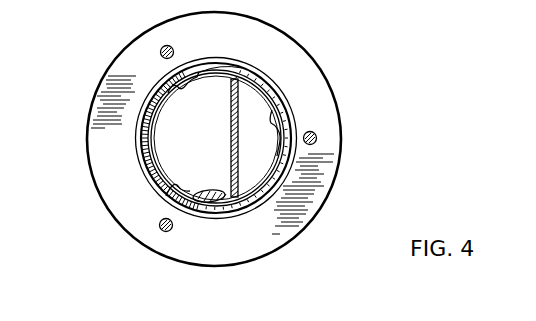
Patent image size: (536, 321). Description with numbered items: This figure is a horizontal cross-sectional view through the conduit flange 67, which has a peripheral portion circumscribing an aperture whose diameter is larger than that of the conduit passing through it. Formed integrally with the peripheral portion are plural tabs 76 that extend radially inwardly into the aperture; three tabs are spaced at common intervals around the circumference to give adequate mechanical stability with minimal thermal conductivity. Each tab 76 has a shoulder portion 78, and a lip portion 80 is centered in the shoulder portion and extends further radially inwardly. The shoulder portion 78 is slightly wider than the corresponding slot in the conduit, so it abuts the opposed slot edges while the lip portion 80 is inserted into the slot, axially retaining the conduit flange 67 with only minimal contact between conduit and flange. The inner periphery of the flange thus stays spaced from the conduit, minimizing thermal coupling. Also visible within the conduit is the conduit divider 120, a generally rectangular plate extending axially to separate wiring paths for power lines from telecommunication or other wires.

The conduit flange 67 is at (324, 75).
The tabs 76 is at (178, 190).
The shoulder portion 78 is at (204, 79).
The lip portion 80 is at (269, 135).
The conduit divider 120 is at (231, 131).